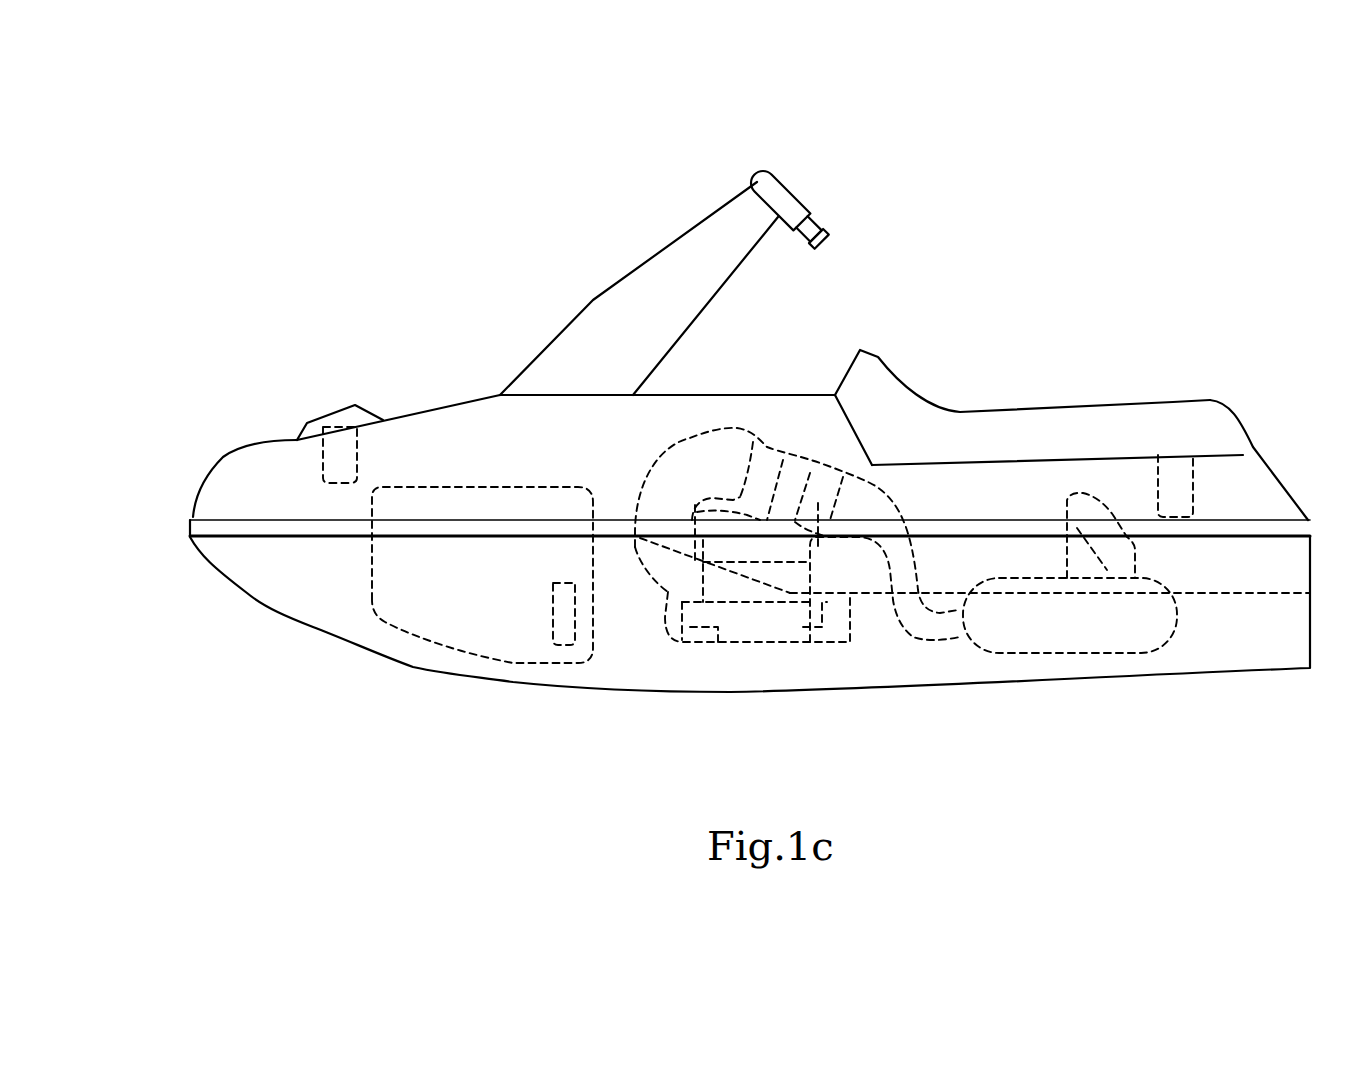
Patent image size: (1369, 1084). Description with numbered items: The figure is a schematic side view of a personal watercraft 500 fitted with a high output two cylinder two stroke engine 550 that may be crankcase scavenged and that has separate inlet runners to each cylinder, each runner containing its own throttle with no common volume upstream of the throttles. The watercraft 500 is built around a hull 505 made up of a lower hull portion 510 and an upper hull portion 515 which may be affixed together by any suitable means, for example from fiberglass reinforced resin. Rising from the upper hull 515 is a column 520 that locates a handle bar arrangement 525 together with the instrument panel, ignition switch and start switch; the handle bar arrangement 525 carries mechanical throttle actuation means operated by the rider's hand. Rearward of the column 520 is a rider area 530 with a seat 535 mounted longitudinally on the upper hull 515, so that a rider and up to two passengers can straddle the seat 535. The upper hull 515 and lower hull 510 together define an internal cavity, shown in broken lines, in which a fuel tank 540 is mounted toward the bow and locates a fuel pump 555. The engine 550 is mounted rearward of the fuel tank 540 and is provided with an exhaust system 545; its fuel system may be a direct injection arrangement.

The personal watercraft 500 is at (157, 489).
The hull 505 is at (413, 389).
The lower hull portion 510 is at (291, 596).
The upper hull portion 515 is at (470, 428).
The column 520 is at (640, 283).
The handle bar arrangement 525 is at (777, 190).
The rider area 530 is at (1007, 404).
The seat 535 is at (1172, 417).
The fuel tank 540 is at (536, 484).
The exhaust system 545 is at (773, 457).
The engine 550 is at (692, 452).
The fuel pump 555 is at (576, 646).